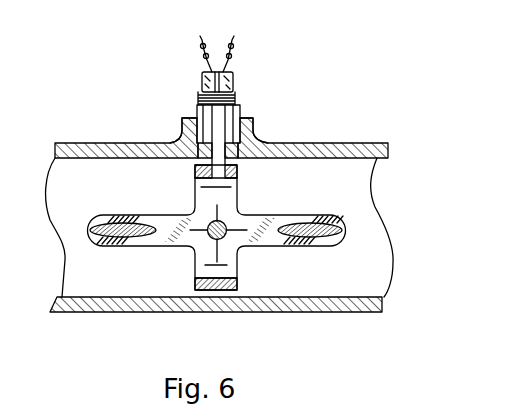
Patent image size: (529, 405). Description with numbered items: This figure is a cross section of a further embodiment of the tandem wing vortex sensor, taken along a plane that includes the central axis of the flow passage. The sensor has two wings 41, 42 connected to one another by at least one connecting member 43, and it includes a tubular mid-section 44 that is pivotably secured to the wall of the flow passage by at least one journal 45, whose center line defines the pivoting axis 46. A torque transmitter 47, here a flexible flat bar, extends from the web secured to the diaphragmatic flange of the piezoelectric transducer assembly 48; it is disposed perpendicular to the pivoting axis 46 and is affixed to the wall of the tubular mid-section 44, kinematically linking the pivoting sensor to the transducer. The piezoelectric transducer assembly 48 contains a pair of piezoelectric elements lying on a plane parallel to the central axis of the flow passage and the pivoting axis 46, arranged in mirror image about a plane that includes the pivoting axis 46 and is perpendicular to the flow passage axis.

The wing 41 is at (125, 240).
The wing 42 is at (302, 218).
The connecting member 43 is at (195, 193).
The tubular mid-section 44 is at (160, 216).
The journal 45 is at (218, 221).
The pivoting axis 46 is at (220, 237).
The torque transmitter 47 is at (262, 140).
The piezoelectric transducer assembly 48 is at (214, 126).